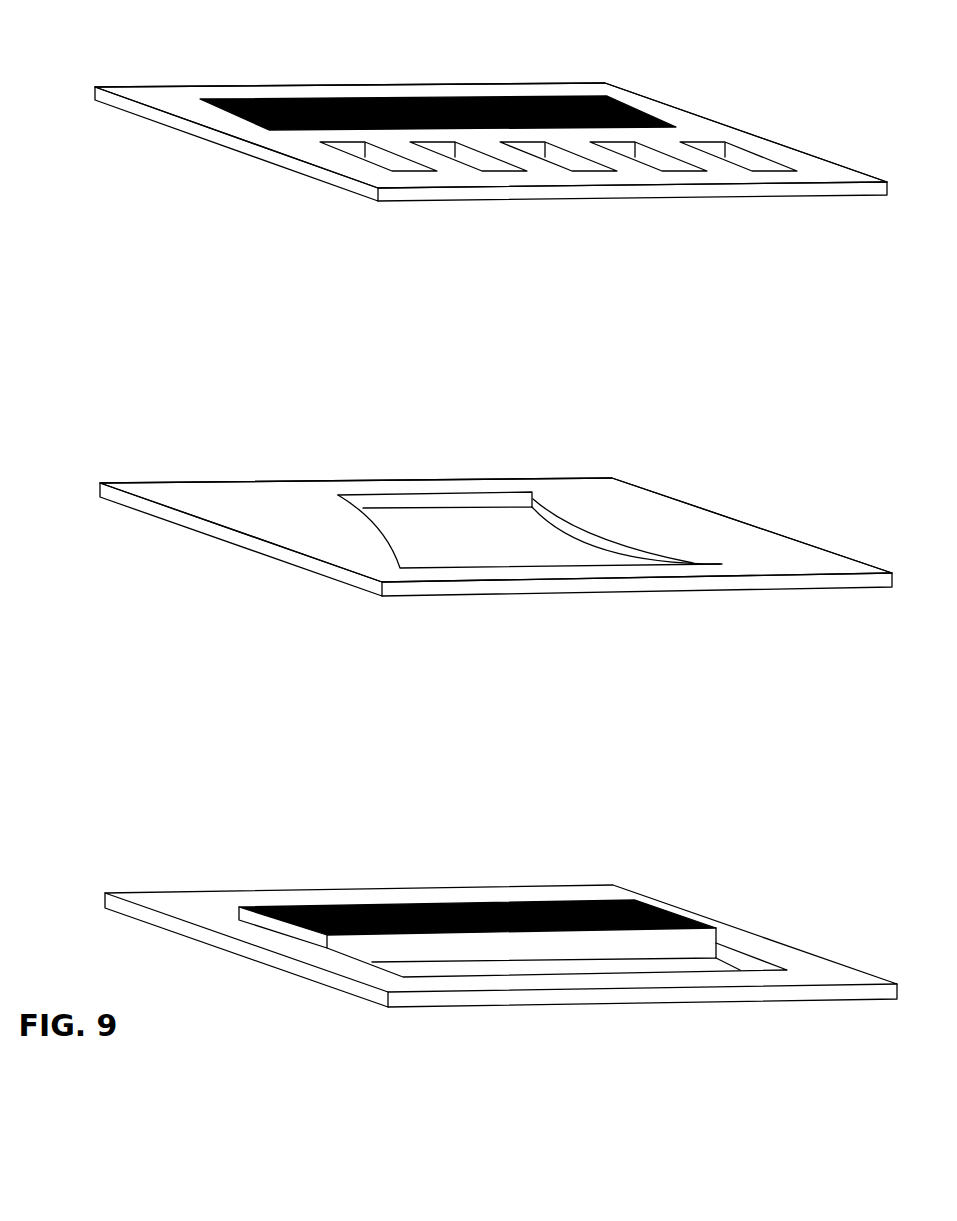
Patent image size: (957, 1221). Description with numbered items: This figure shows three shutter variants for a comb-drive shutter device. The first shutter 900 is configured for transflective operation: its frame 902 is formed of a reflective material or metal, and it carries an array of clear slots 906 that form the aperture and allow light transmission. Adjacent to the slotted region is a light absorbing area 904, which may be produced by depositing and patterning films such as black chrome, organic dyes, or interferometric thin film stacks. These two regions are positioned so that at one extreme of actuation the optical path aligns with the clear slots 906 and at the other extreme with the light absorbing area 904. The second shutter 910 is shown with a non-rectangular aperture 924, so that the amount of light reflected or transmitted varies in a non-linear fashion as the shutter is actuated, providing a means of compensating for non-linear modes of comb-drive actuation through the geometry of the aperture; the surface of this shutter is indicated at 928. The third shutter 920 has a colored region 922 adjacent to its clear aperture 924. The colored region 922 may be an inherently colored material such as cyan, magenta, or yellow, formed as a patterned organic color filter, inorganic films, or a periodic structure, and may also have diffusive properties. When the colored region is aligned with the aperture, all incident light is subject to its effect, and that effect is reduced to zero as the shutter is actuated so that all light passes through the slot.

The shutter 900 is at (587, 200).
The frame 902 is at (320, 157).
The light absorbing area 904 is at (347, 99).
The clear slots 906 is at (393, 157).
The shutter 910 is at (593, 596).
The colored region 922 is at (353, 498).
The aperture 924 is at (563, 552).
The top surface of second layer 928 is at (325, 553).
The shutter 920 is at (597, 1004).